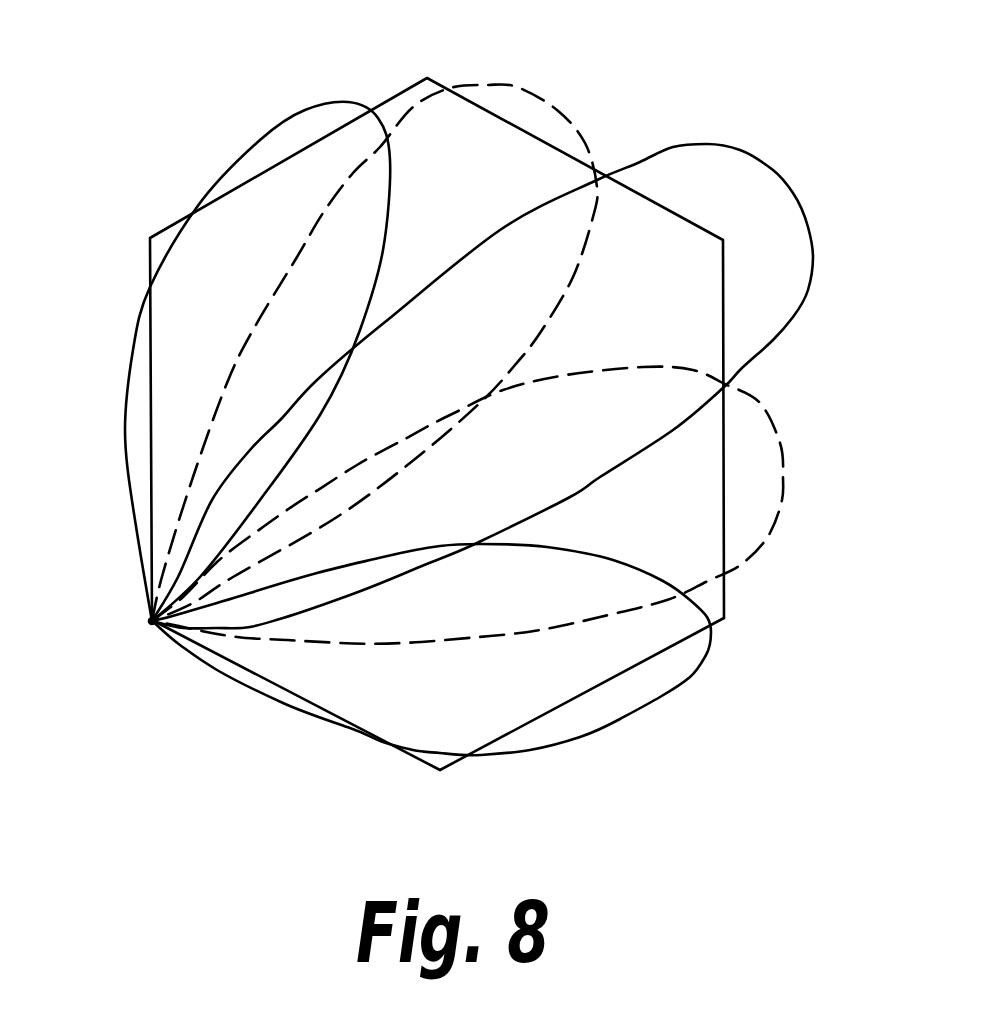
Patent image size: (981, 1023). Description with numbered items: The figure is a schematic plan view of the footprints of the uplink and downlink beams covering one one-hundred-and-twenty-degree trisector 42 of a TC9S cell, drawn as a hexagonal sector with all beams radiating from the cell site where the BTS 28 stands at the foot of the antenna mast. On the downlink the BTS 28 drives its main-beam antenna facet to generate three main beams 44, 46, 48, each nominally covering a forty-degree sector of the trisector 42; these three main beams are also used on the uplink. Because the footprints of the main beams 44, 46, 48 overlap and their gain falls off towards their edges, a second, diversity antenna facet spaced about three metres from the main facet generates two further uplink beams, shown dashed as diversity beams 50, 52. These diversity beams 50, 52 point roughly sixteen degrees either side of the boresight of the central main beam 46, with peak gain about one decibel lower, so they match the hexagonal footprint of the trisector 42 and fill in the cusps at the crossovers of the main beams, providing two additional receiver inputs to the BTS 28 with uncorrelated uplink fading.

The BTS 28 is at (150, 619).
The trisector 42 is at (517, 727).
The main beam 44 is at (263, 140).
The main beam 46 is at (793, 187).
The main beam 48 is at (643, 705).
The diversity beam 50 is at (534, 95).
The diversity beam 52 is at (768, 533).